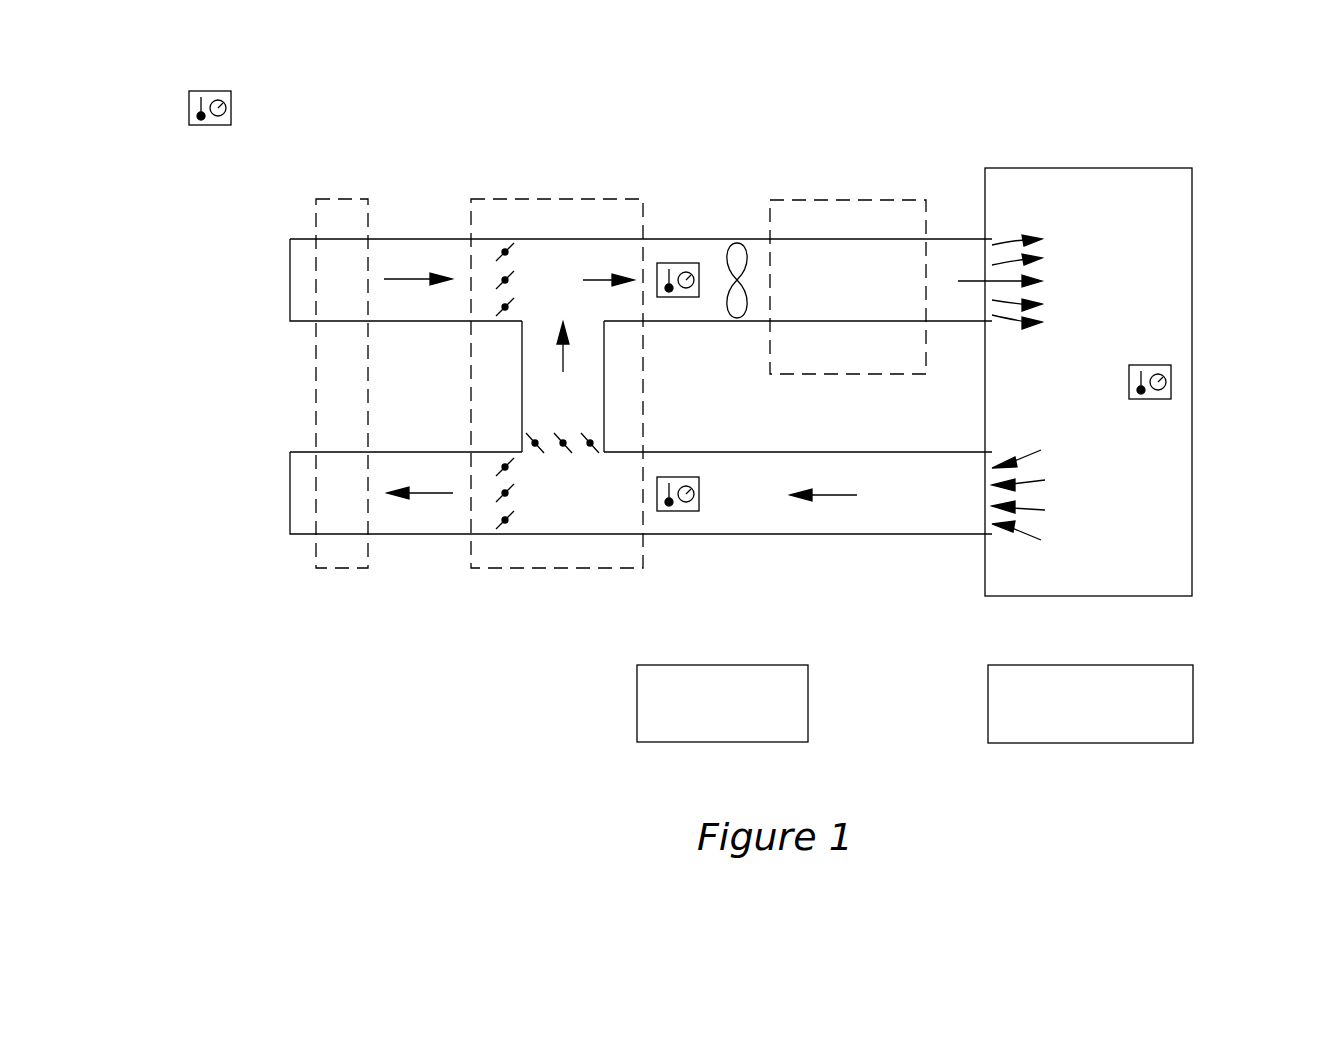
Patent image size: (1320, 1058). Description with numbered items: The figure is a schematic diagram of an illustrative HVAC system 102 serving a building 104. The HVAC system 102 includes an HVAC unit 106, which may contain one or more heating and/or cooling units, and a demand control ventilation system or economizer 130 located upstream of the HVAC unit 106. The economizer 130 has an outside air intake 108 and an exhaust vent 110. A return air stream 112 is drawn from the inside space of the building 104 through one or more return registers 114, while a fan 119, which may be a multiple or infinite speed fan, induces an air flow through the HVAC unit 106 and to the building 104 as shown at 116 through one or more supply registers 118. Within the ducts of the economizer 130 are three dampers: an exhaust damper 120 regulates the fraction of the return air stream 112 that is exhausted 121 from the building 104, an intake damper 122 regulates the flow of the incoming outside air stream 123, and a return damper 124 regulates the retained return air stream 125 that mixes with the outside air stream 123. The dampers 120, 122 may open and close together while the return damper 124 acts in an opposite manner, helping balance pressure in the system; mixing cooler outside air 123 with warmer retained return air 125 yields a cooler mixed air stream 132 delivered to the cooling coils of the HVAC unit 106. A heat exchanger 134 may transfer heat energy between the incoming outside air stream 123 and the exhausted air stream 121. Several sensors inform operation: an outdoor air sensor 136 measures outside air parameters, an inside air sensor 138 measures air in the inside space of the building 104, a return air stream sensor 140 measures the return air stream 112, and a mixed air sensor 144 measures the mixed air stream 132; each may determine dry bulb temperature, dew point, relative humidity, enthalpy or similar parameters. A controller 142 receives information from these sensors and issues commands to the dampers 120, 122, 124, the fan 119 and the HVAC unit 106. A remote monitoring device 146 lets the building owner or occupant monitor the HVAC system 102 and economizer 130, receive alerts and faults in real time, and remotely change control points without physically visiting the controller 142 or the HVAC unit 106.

The HVAC system 102 is at (806, 90).
The building 104 is at (1192, 208).
The HVAC unit 106 is at (848, 200).
The outside air intake 108 is at (290, 279).
The exhaust vent 110 is at (290, 491).
The return air stream 112 is at (835, 495).
The return register 114 is at (993, 534).
The supply air flow 116 is at (972, 281).
The supply register 118 is at (993, 244).
The fan 119 is at (740, 280).
The exhaust damper 120 is at (512, 462).
The exhaust air stream 121 is at (430, 493).
The intake damper 122 is at (502, 280).
The outside air stream 123 is at (406, 279).
The return damper 124 is at (563, 445).
The retained return air stream 125 is at (563, 357).
The demand control ventilation system 130 is at (557, 199).
The mixed air stream 132 is at (598, 280).
The heat exchanger 134 is at (341, 199).
The outdoor air sensor 136 is at (210, 91).
The inside air sensor 138 is at (1171, 374).
The return air stream sensor 140 is at (678, 512).
The controller 142 is at (808, 703).
The mixed air sensor 144 is at (680, 263).
The remote monitoring device 146 is at (1193, 703).